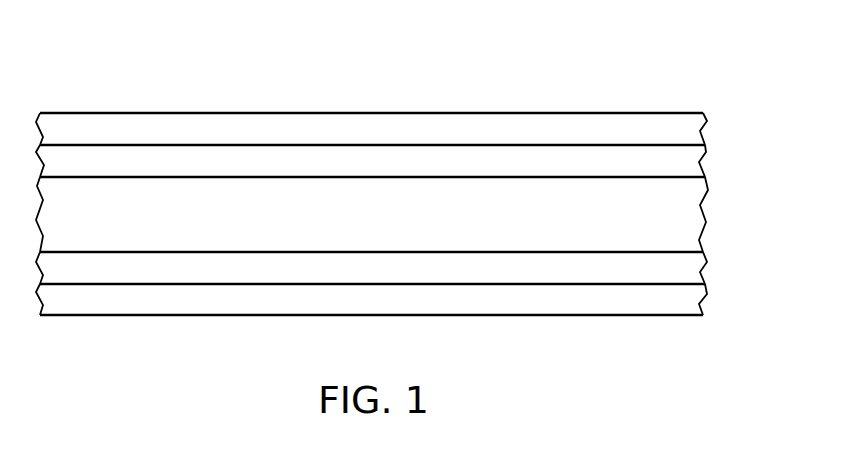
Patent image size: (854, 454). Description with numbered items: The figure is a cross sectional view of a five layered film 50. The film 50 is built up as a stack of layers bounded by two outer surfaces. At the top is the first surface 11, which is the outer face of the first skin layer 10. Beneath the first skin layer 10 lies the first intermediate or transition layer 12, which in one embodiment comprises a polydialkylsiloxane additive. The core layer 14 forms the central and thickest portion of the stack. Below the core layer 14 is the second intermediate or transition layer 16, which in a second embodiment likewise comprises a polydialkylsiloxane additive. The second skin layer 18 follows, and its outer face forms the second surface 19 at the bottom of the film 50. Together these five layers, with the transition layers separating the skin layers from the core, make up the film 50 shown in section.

The five layered film 50 is at (163, 96).
The first surface 11 is at (650, 108).
The first skin layer 10 is at (704, 118).
The first intermediate or transition layer 12 is at (704, 158).
The core layer 14 is at (704, 220).
The second intermediate or transition layer 16 is at (704, 258).
The second skin layer 18 is at (704, 290).
The second surface 19 is at (598, 318).